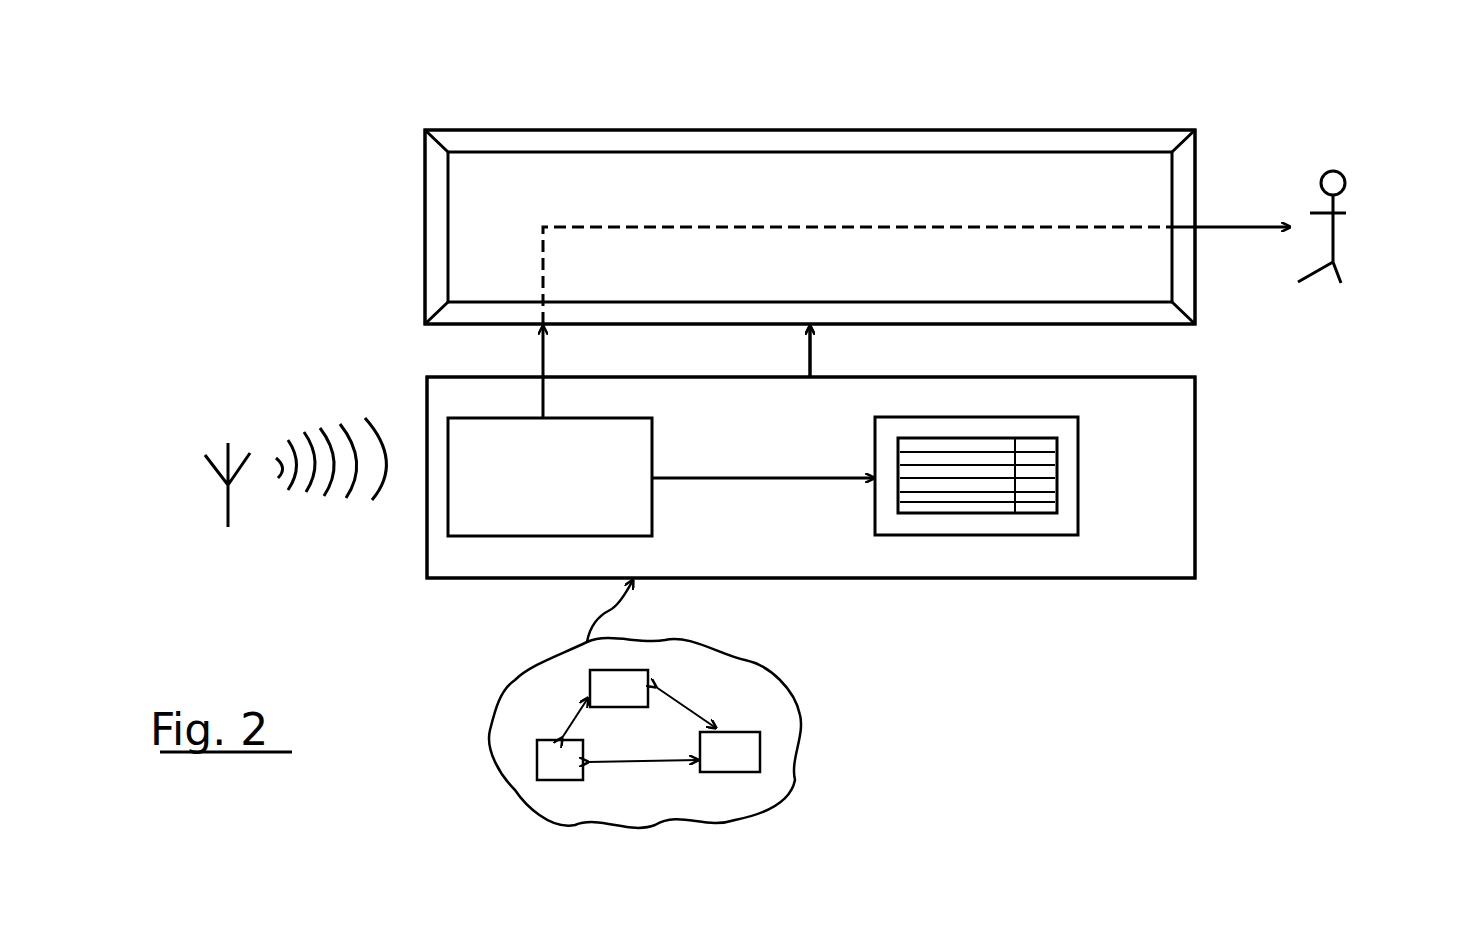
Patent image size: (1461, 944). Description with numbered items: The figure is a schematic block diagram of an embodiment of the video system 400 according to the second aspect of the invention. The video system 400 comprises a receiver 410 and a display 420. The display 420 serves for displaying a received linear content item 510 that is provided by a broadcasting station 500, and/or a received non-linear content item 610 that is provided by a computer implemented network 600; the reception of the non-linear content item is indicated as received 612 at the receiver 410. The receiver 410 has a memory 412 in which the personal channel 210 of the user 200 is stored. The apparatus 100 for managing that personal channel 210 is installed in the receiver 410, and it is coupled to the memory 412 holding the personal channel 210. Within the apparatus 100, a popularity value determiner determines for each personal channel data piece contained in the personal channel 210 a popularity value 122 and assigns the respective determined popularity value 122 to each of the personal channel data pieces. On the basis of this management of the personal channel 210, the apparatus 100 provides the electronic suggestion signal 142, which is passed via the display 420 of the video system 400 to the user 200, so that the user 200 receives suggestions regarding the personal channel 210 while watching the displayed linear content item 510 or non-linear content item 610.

The video system 400 is at (332, 115).
The display 420 is at (1196, 130).
The receiver 410 is at (1196, 377).
The apparatus 100 is at (652, 418).
The electronic suggestion signal 142 is at (553, 355).
The user 200 is at (1357, 192).
The popularity value 122 is at (760, 466).
The received non-linear content item 612 is at (815, 350).
The memory 412 is at (1078, 417).
The personal channel 210 is at (1057, 506).
The broadcasting station 500 is at (198, 505).
The linear content item 510 is at (318, 508).
The computer implemented network 600 is at (805, 748).
The non-linear content item 610 is at (615, 615).